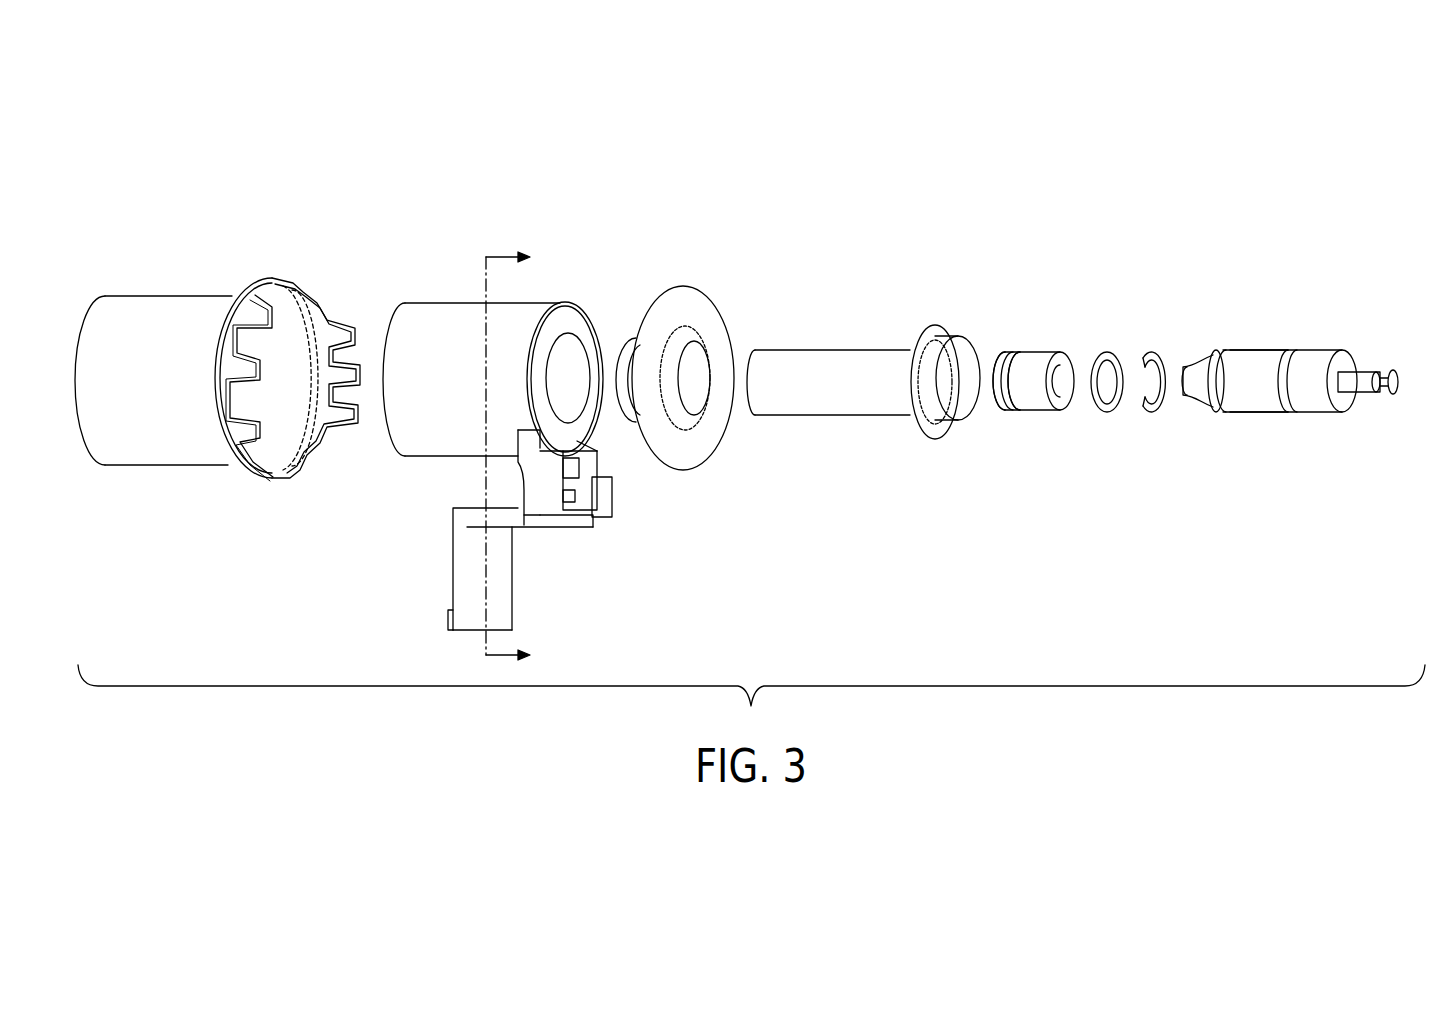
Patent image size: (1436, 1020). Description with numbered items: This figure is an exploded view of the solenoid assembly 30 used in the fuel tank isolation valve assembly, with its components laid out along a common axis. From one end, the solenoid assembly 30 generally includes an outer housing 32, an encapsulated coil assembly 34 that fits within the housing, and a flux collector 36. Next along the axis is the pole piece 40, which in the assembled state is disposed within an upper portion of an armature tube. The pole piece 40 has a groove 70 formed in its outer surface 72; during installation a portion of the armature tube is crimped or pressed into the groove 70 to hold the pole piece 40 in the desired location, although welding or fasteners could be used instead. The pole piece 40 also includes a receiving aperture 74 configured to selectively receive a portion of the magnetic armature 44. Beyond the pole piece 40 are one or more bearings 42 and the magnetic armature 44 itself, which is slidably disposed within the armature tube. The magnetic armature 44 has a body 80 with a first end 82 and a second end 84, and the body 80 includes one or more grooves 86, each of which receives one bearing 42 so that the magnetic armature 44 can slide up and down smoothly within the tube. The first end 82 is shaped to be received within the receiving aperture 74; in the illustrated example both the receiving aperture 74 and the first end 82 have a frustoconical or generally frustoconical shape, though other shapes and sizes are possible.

The solenoid assembly 30 is at (845, 350).
The outer housing 32 is at (195, 296).
The encapsulated coil assembly 34 is at (448, 270).
The flux collector 36 is at (682, 290).
The pole piece 40 is at (1040, 350).
The bearings 42 is at (1107, 350).
The magnetic armature 44 is at (1272, 325).
The groove 70 is at (1013, 411).
The outer surface 72 is at (1035, 406).
The receiving aperture 74 is at (1066, 399).
The body 80 is at (1265, 403).
The first end 82 is at (1205, 345).
The second end 84 is at (1362, 346).
The grooves 86 is at (1222, 412).